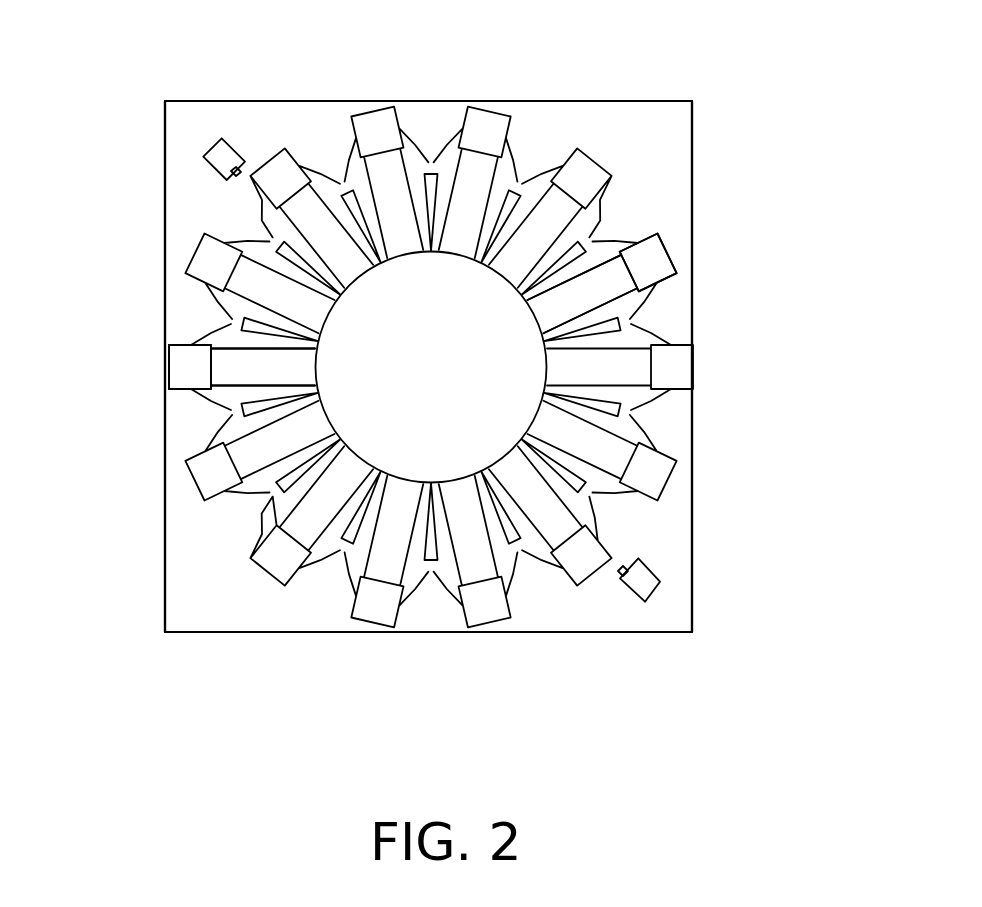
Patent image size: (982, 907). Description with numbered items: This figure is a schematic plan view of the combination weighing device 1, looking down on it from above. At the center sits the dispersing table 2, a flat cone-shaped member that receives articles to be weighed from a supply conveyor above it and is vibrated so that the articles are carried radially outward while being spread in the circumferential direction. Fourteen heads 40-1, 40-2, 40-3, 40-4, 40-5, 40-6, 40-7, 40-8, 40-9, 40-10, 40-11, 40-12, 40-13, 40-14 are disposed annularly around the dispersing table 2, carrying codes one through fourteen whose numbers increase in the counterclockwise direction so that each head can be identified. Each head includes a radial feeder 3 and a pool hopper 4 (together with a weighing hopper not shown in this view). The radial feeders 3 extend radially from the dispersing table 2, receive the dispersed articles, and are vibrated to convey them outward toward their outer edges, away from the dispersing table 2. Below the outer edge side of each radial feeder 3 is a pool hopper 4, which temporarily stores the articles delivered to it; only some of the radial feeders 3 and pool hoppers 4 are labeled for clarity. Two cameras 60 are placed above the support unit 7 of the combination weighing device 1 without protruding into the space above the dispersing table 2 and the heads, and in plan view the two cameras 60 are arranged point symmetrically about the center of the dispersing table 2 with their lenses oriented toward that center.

The combination weighing device 1 is at (722, 107).
The dispersing table 2 is at (426, 393).
The radial feeder 3 is at (230, 360).
The pool hopper 4 is at (176, 373).
The support unit 7 is at (196, 603).
The camera 60 is at (237, 152).
The head 40-1 is at (483, 640).
The head 40-2 is at (573, 607).
The head 40-3 is at (679, 492).
The head 40-4 is at (699, 358).
The head 40-5 is at (684, 247).
The head 40-6 is at (628, 156).
The head 40-7 is at (490, 96).
The head 40-8 is at (369, 97).
The head 40-9 is at (283, 128).
The head 40-10 is at (178, 240).
The head 40-11 is at (150, 350).
The head 40-12 is at (168, 478).
The head 40-13 is at (262, 595).
The head 40-14 is at (368, 642).